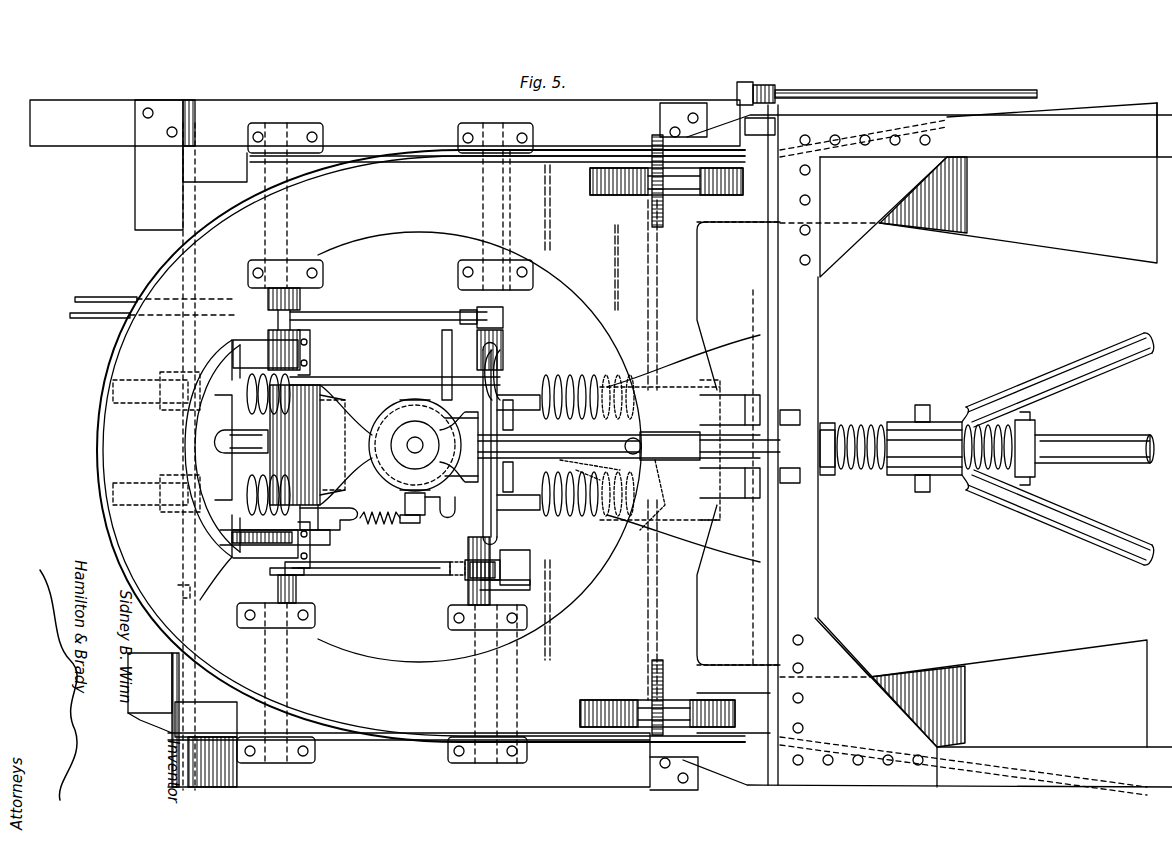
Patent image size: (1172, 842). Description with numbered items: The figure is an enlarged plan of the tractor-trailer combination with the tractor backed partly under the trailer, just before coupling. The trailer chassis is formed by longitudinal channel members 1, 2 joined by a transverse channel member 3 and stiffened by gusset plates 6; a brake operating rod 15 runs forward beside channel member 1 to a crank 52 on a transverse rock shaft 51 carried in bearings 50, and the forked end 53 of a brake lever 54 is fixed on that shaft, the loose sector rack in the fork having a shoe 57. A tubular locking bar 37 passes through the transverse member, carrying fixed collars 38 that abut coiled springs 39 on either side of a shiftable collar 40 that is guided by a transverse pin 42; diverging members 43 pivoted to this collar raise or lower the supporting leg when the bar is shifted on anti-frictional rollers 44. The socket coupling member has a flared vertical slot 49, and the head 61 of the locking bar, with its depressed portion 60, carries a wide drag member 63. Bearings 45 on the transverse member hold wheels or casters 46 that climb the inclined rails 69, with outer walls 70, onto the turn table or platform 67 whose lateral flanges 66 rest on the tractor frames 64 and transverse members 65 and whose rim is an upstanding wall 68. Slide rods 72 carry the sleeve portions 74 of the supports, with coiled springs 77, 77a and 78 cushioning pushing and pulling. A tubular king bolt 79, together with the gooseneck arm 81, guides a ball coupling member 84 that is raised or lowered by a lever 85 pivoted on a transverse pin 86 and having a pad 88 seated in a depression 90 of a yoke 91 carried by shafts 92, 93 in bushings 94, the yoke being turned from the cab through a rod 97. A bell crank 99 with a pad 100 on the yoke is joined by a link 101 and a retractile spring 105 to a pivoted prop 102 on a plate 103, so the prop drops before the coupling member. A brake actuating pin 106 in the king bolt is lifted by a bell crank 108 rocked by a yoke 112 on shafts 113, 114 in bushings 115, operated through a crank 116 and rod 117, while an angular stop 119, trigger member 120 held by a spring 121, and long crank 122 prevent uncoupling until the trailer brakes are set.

The longitudinal channel member 1 is at (1055, 125).
The longitudinal channel member 2 is at (1092, 752).
The transverse channel member 3 is at (810, 343).
The gusset plates 6 is at (870, 450).
The brake operating rod 15 is at (902, 93).
The tubular locking bar 37 is at (1115, 428).
The collars 38 is at (828, 425).
The coiled springs 39 is at (862, 470).
The shiftable collar 40 is at (898, 422).
The transverse pin 42 is at (900, 476).
The diverging members 43 is at (1078, 358).
The anti-frictional rollers 44 is at (722, 490).
The bearings 45 is at (732, 220).
The wheels or casters 46 is at (605, 190).
The vertical slot 49 is at (640, 455).
The bearings 50 is at (748, 124).
The transverse rock shaft 51 is at (766, 296).
The crank 52 is at (770, 88).
The forked end 53 is at (740, 395).
The brake lever 54 is at (662, 432).
The shoe 57 is at (662, 505).
The depressed portion 60 is at (460, 415).
The head 61 is at (515, 398).
The drag member 63 is at (500, 400).
The longitudinal chassis members 64 is at (430, 95).
The transverse members 65 is at (163, 105).
The lateral flanges 66 is at (218, 190).
The turn table or platform 67 is at (128, 522).
The upstanding wall or flange 68 is at (103, 470).
The inclined rails 69 is at (1030, 238).
The outer walls or flanges 70 is at (1128, 112).
The slide rods 72 is at (115, 380).
The sleeve portions 74 is at (520, 505).
The coiled springs 77 is at (200, 360).
The coiled springs 77a is at (580, 380).
The coiled springs 78 is at (216, 578).
The tubular king bolt 79 is at (412, 437).
The gooseneck arm 81 is at (300, 400).
The ball coupling member 84 is at (448, 515).
The lever 85 is at (362, 398).
The transverse pin 86 is at (325, 395).
The pad 88 is at (215, 447).
The depression 90 is at (232, 440).
The yoke 91 is at (250, 348).
The shaft 92 is at (285, 690).
The shaft 93 is at (270, 238).
The bushings 94 is at (297, 598).
The rod 97 is at (112, 296).
The bell crank 99 is at (300, 535).
The pad 100 is at (245, 532).
The link 101 is at (350, 522).
The pivoted prop 102 is at (410, 525).
The plate 103 is at (415, 518).
The coiled retractile spring 105 is at (386, 525).
The brake actuating pin 106 is at (447, 368).
The bell crank 108 is at (570, 462).
The yoke 112 is at (495, 355).
The shaft 113 is at (473, 688).
The shaft 114 is at (480, 206).
The bushings 115 is at (477, 296).
The crank 116 is at (505, 318).
The rod 117 is at (378, 312).
The angular stop member 119 is at (532, 571).
The trigger member 120 is at (458, 562).
The spring 121 is at (475, 580).
The long crank 122 is at (412, 575).